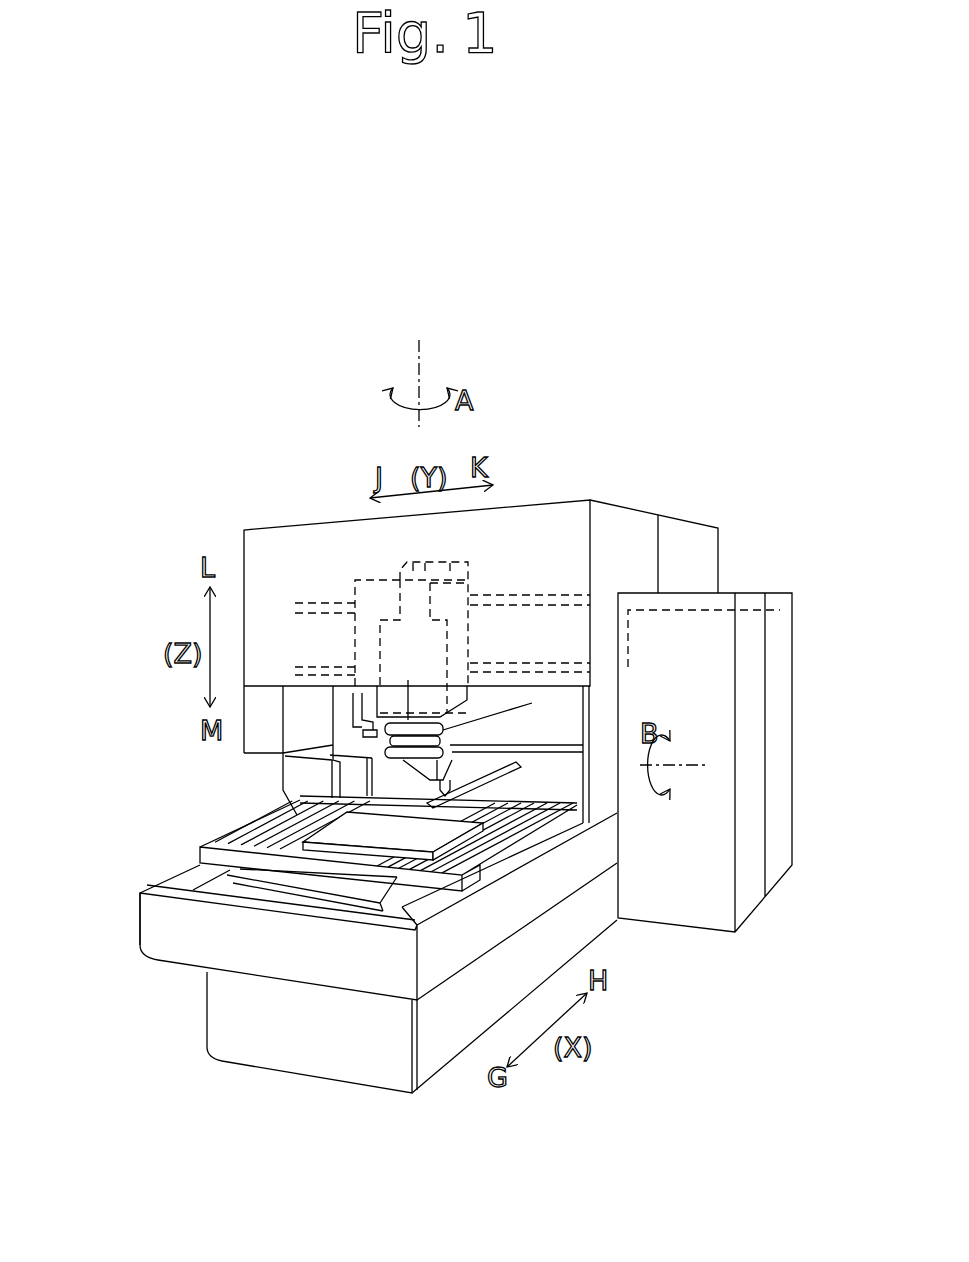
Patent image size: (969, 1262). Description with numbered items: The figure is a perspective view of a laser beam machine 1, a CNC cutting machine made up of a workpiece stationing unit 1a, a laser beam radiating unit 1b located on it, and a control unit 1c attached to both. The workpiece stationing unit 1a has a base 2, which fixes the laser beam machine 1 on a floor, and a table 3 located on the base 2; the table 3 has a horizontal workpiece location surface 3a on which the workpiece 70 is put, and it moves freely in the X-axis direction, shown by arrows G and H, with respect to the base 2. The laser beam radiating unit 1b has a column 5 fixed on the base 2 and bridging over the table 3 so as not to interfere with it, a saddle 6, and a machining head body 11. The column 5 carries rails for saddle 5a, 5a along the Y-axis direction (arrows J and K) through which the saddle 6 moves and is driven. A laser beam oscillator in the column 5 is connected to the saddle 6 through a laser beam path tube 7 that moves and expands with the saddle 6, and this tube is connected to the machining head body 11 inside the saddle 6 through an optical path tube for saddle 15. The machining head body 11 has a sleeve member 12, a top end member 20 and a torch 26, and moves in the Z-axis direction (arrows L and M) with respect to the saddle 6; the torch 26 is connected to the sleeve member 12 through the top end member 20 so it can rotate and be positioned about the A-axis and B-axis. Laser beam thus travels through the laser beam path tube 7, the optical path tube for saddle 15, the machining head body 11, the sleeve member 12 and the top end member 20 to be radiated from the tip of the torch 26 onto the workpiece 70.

The laser beam machine 1 is at (567, 434).
The workpiece stationing unit 1a is at (127, 870).
The laser beam radiating unit 1b is at (695, 493).
The control unit 1c is at (690, 602).
The base 2 is at (197, 1005).
The table 3 is at (200, 845).
The workpiece location surface 3a is at (315, 835).
The column 5 is at (617, 504).
The rails for saddle 5a is at (563, 590).
The saddle 6 is at (353, 657).
The laser beam path tube 7 is at (502, 551).
The machining head body 11 is at (380, 630).
The sleeve member 12 is at (388, 742).
The optical path tube for saddle 15 is at (400, 603).
The top end member 20 is at (463, 750).
The torch 26 is at (437, 788).
The workpiece 70 is at (493, 803).